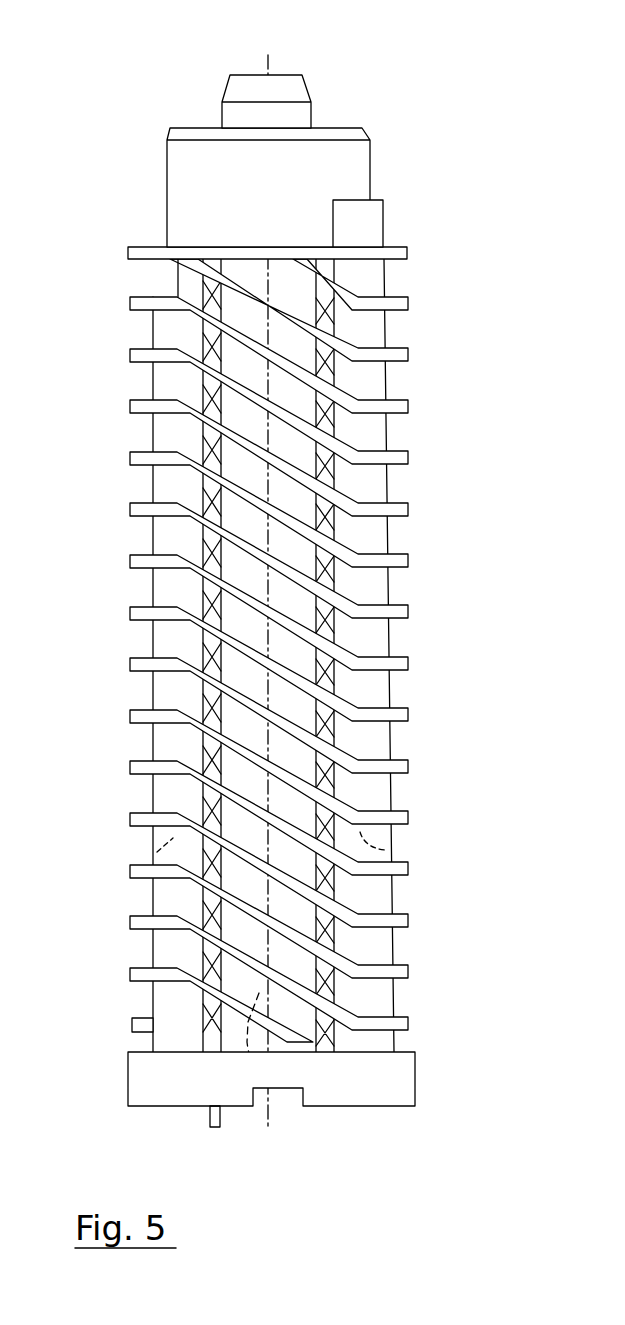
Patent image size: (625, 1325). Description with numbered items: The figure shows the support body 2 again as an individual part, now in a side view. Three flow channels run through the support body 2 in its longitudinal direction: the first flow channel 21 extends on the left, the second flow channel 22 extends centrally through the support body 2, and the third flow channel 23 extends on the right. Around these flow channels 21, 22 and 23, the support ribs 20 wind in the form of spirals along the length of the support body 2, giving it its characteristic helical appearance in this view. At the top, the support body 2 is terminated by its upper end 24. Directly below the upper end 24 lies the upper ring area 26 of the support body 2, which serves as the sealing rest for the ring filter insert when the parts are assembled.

The support body 2 is at (493, 121).
The support ribs 20 is at (400, 558).
The first flow channel 21 is at (150, 855).
The second flow channel 22 is at (267, 1090).
The third flow channel 23 is at (393, 845).
The upper end 24 is at (237, 87).
The upper ring area 26 is at (185, 170).